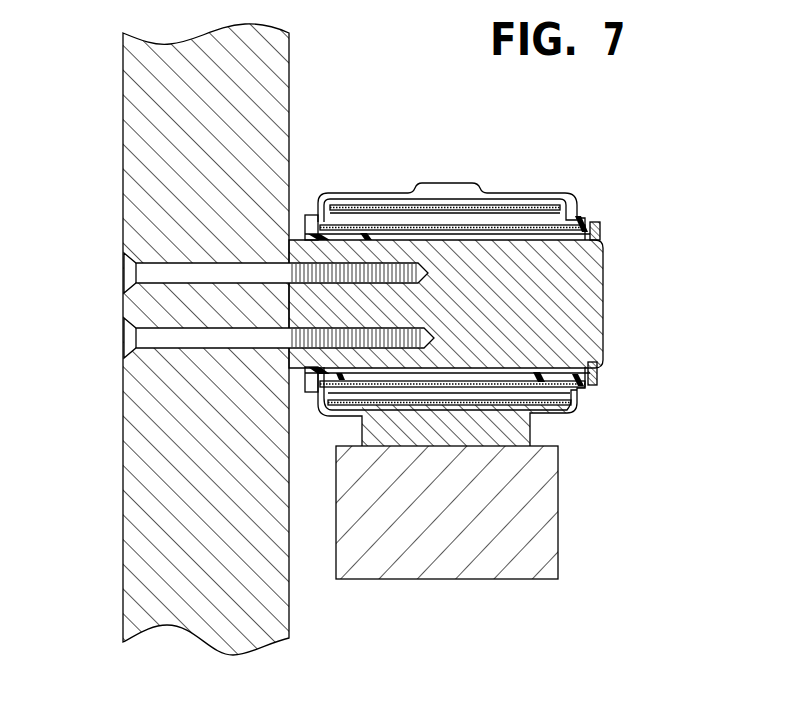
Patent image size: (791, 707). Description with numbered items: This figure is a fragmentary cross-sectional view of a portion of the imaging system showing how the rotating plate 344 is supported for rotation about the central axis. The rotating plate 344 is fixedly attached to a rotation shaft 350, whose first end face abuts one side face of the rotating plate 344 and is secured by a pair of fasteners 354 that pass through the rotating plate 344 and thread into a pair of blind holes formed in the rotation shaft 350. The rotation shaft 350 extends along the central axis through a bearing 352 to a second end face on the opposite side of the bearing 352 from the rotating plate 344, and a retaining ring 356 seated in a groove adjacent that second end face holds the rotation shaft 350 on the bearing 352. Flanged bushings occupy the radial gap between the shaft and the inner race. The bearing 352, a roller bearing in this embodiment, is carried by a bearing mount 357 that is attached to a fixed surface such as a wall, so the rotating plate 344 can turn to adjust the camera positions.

The rotating plate 344 is at (150, 505).
The rotation shaft 350 is at (587, 311).
The bearing 352 is at (512, 202).
The fasteners 354 is at (150, 340).
The retaining ring 356 is at (597, 385).
The bearing mount 357 is at (523, 432).